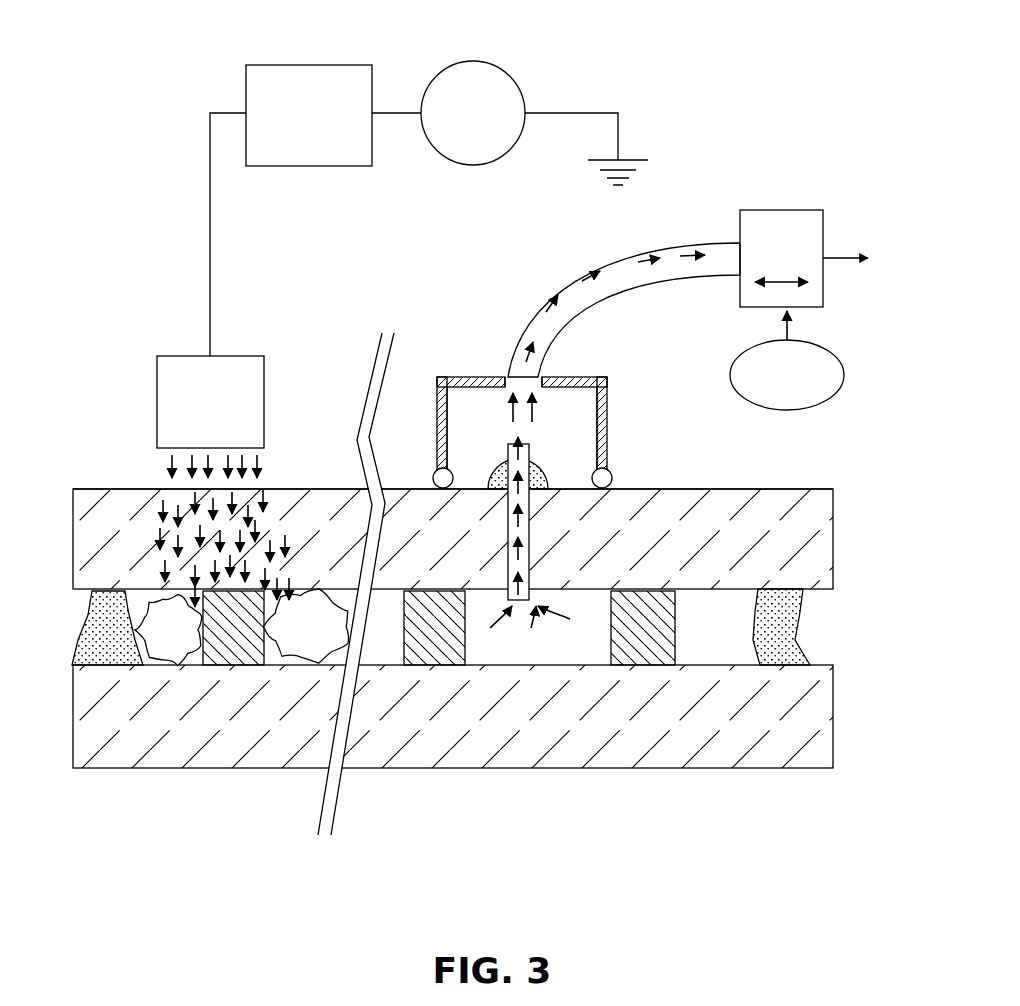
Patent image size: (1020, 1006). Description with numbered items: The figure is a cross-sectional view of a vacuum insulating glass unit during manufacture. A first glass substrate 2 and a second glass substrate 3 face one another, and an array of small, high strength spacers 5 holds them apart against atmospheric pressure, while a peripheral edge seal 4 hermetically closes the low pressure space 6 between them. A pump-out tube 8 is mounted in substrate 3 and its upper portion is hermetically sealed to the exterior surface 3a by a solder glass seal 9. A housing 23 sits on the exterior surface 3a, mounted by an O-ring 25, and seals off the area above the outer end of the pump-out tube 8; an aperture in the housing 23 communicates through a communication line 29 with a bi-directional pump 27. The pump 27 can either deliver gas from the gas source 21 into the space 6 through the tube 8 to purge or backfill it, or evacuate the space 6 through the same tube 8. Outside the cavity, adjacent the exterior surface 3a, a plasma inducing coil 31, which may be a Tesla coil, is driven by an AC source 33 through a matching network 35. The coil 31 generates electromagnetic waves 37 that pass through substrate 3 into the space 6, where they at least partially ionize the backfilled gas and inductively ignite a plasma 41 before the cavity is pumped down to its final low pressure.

The first glass substrate 2 is at (565, 745).
The second glass substrate 3 is at (783, 498).
The exterior surface of substrate 3a is at (700, 489).
The edge seal 4 is at (95, 645).
The spacers 5 is at (655, 617).
The low pressure space 6 is at (270, 667).
The pump-out tube 8 is at (529, 505).
The solder glass seal 9 is at (536, 476).
The gas source 21 is at (832, 365).
The housing 23 is at (480, 377).
The O-ring 25 is at (612, 476).
The pump 27 is at (764, 210).
The communication line 29 is at (600, 262).
The plasma inducing coil 31 is at (237, 368).
The AC source 33 is at (508, 83).
The matching network 35 is at (346, 72).
The electromagnetic waves 37 is at (148, 474).
The plasma 41 is at (168, 652).